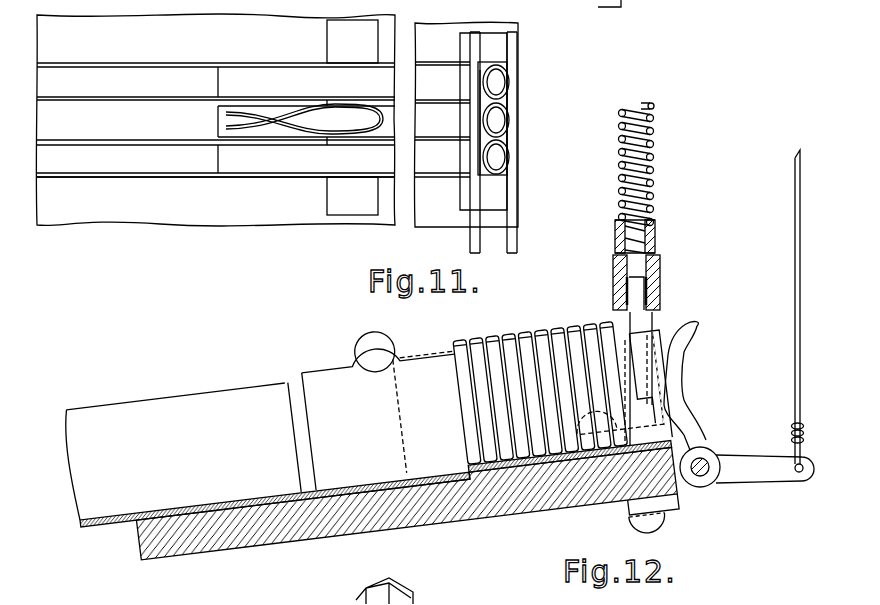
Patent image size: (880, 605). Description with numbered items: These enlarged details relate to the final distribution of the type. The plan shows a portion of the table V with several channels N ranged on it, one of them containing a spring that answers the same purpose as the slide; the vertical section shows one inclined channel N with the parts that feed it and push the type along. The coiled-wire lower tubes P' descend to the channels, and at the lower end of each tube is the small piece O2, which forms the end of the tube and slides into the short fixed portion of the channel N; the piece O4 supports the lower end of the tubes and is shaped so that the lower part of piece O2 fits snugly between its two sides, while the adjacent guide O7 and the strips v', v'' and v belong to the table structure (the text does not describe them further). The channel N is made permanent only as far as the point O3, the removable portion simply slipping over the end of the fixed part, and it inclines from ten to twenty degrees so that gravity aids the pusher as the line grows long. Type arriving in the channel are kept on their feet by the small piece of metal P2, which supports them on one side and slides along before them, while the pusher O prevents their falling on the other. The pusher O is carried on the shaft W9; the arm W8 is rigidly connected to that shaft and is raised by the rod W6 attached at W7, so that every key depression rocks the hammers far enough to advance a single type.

In FIG. 11, the channel N is at (215, 120).
In FIG. 12, the channel N is at (188, 447).
In FIG. 12, the table V is at (410, 526).
In FIG. 12, the plate strip v' is at (281, 538).
In FIG. 12, the upper plate strip v'' is at (576, 505).
In FIG. 12, the plate end v is at (661, 514).
In FIG. 12, the permanent section of channel O3 is at (302, 359).
In FIG. 11, the small piece of metal P2 is at (283, 140).
In FIG. 12, the small piece of metal P2 is at (485, 390).
In FIG. 11, the piece O2 is at (478, 82).
In FIG. 12, the piece O2 is at (655, 240).
In FIG. 11, the lower tubes P' is at (512, 118).
In FIG. 12, the lower tubes P' is at (648, 164).
In FIG. 11, the piece O4 is at (470, 198).
In FIG. 12, the piece O4 is at (660, 283).
In FIG. 11, the rail O7 is at (515, 197).
In FIG. 12, the pusher O is at (694, 418).
In FIG. 12, the rod W6 is at (782, 333).
In FIG. 12, the connection point W7 is at (798, 484).
In FIG. 12, the arm W8 is at (765, 469).
In FIG. 12, the shaft W9 is at (706, 486).